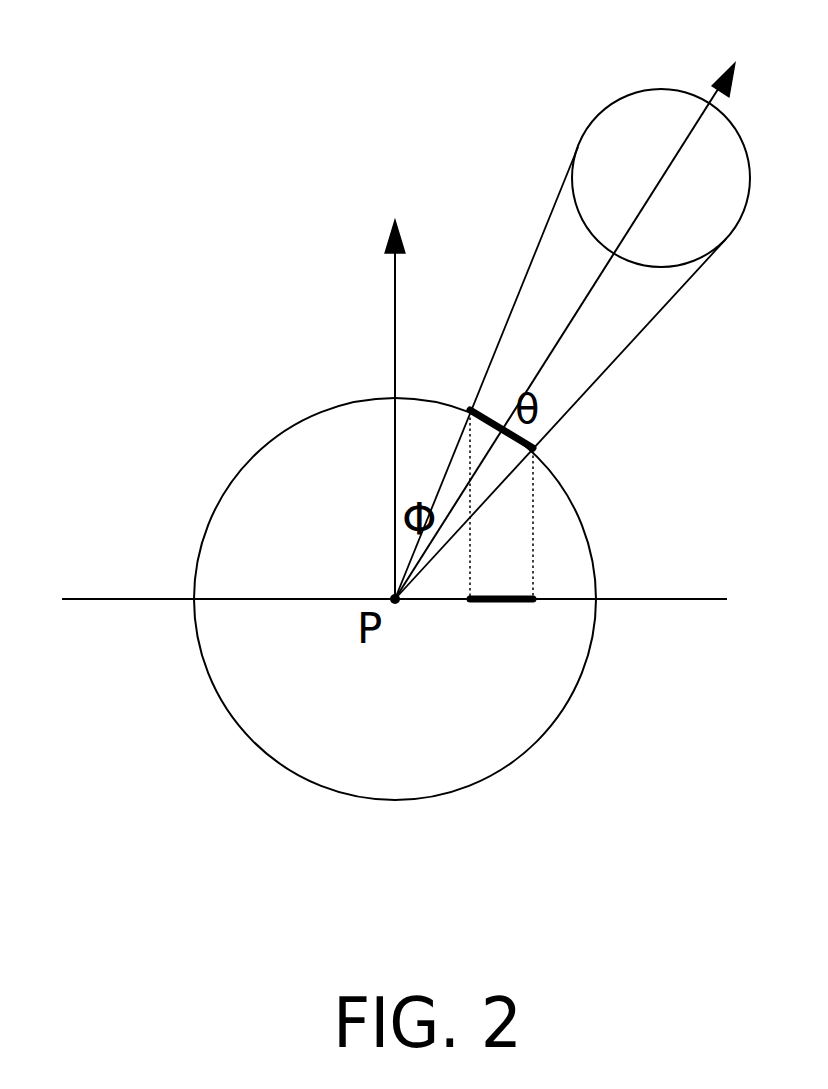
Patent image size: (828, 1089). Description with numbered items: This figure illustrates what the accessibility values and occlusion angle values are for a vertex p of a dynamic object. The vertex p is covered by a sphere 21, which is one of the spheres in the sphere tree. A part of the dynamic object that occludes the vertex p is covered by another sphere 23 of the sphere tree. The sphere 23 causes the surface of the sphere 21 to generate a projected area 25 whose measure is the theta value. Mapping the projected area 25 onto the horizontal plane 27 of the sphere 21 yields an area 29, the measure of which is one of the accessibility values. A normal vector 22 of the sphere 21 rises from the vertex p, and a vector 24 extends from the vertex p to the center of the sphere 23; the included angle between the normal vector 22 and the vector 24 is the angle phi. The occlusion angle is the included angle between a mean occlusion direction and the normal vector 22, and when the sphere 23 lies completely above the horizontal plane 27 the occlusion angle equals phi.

The sphere 21 is at (585, 666).
The normal vector 22 is at (393, 330).
The sphere 23 is at (653, 87).
The vector 24 is at (590, 295).
The projected area 25 is at (527, 426).
The horizontal plane 27 is at (106, 597).
The area 29 is at (507, 603).